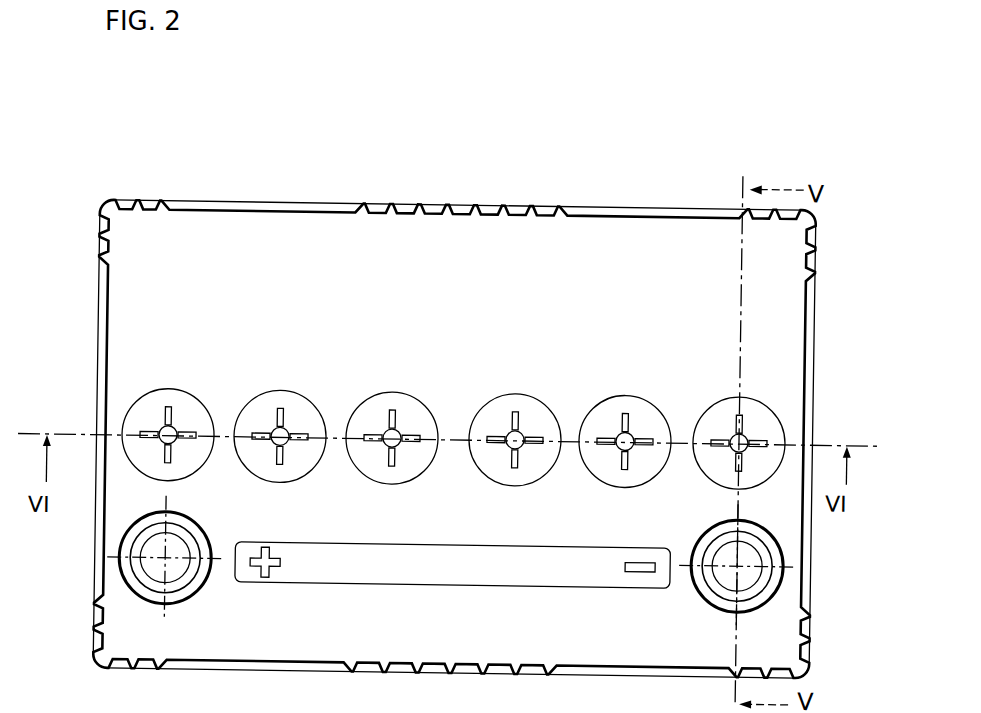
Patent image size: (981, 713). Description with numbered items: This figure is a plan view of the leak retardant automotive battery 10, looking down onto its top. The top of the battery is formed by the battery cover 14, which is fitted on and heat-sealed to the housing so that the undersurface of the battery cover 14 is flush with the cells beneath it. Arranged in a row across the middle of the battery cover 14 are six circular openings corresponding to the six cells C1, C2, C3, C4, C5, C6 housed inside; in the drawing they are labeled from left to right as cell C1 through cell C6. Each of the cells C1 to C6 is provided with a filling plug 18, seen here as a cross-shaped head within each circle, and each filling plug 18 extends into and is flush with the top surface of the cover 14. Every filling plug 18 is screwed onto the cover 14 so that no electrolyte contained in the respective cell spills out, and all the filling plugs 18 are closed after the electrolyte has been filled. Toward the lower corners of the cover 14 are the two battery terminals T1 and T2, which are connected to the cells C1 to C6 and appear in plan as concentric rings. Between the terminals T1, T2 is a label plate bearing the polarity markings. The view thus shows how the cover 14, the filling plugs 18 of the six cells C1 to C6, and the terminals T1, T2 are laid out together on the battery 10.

The leak retardant automotive battery 10 is at (565, 168).
The battery cover 14 is at (330, 252).
The filling plug 18 is at (187, 457).
The cell C1 is at (204, 392).
The cell C2 is at (290, 390).
The cell C3 is at (362, 399).
The cell C4 is at (545, 398).
The cell C5 is at (623, 390).
The cell C6 is at (708, 395).
The battery terminal T1 is at (197, 612).
The battery terminal T2 is at (709, 606).